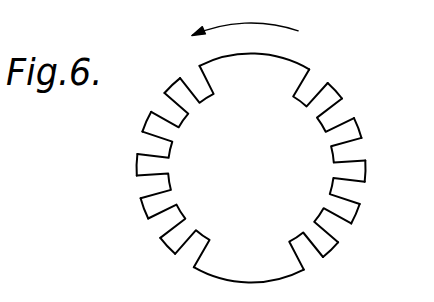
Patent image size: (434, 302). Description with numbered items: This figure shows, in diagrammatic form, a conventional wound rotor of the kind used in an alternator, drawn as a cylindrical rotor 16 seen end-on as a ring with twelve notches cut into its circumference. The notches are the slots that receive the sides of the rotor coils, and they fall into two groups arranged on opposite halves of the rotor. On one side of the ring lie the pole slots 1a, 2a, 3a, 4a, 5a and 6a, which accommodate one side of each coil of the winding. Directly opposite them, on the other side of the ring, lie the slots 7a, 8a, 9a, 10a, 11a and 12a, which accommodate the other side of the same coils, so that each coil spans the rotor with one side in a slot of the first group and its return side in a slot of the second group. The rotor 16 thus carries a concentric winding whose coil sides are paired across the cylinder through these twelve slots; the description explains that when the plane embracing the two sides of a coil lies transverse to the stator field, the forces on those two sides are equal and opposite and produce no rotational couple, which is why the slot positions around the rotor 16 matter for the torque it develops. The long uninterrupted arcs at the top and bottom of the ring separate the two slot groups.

The cylindrical rotor 16 is at (270, 73).
The pole slot 1a is at (315, 83).
The pole slot 2a is at (333, 115).
The pole slot 3a is at (348, 150).
The pole slot 4a is at (345, 188).
The pole slot 5a is at (340, 223).
The pole slot 6a is at (307, 258).
The slot 7a is at (193, 250).
The slot 8a is at (170, 222).
The slot 9a is at (160, 187).
The slot 10a is at (168, 148).
The slot 11a is at (180, 115).
The slot 12a is at (207, 85).